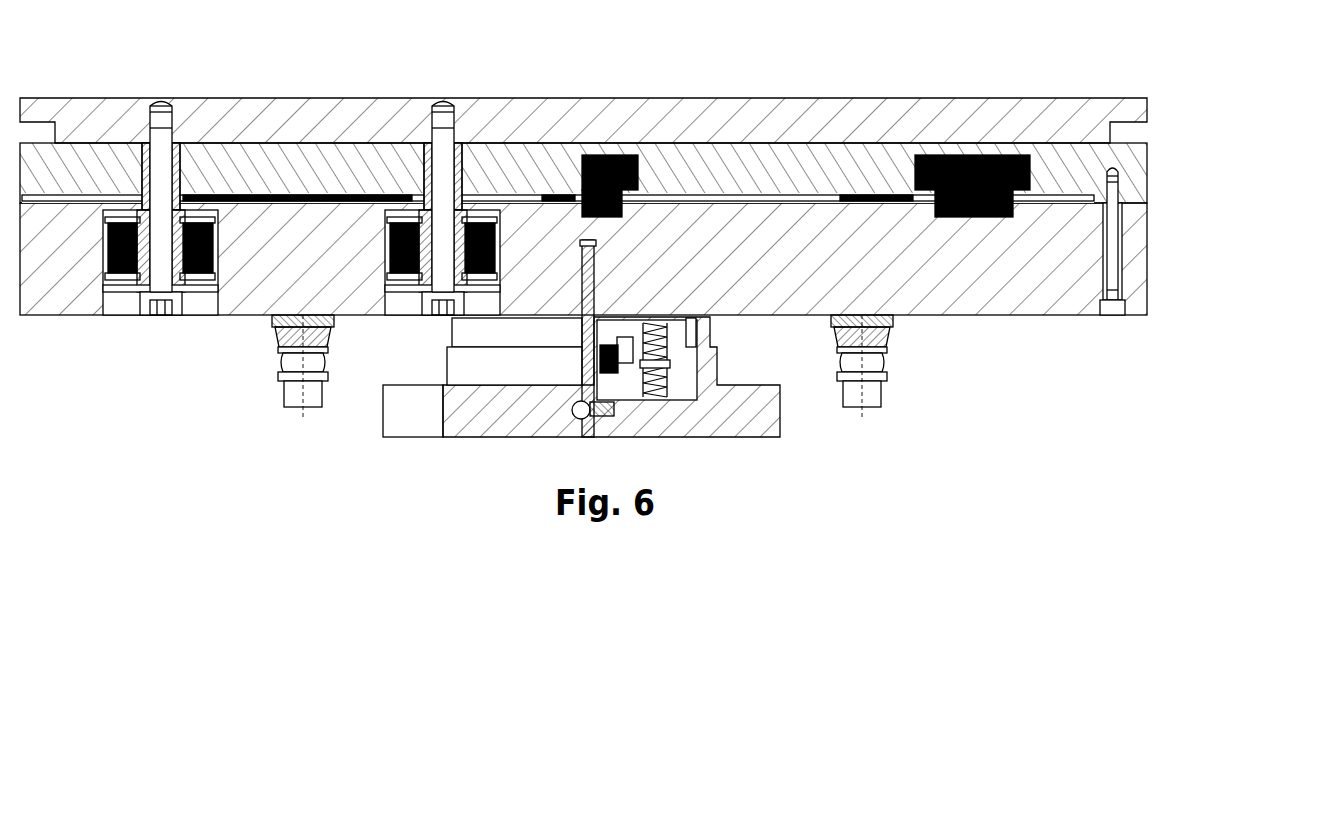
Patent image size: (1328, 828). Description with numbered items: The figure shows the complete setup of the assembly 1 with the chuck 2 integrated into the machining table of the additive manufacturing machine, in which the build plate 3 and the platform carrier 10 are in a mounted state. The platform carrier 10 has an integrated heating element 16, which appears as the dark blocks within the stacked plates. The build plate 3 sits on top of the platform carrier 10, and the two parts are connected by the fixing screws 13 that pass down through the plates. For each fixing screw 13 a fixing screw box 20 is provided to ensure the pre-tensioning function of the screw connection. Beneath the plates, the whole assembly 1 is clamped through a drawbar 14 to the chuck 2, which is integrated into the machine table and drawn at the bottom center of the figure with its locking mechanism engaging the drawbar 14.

The assembly having platform carrier with integrated heating element 1 is at (673, 163).
The chuck 2 is at (770, 432).
The build plate 3 is at (672, 117).
The platform carrier with integrated heating element 10 is at (635, 163).
The fixing screw 13 is at (448, 166).
The drawbar 14 is at (882, 391).
The heating element 16 is at (1024, 150).
The fixing screw box 20 is at (203, 195).